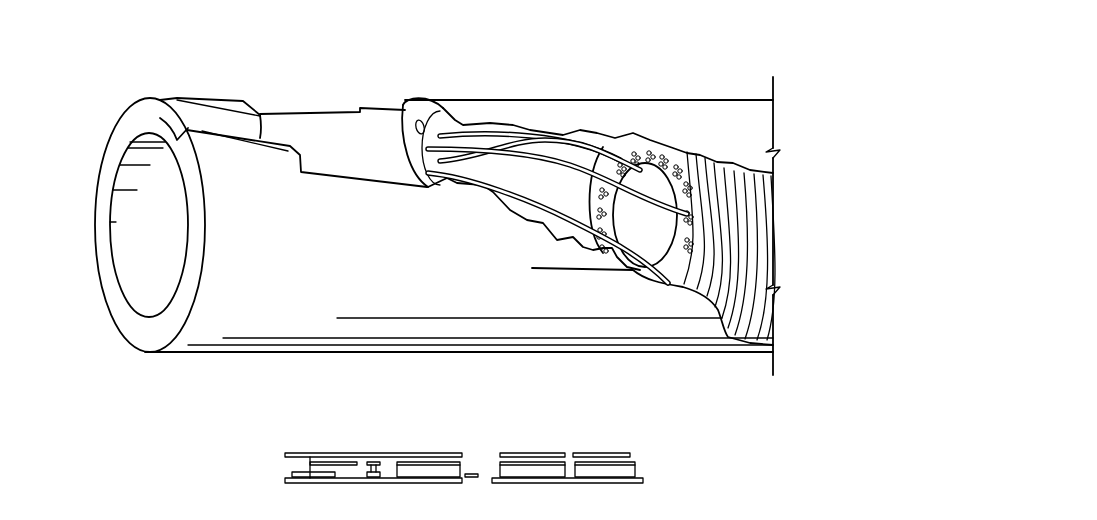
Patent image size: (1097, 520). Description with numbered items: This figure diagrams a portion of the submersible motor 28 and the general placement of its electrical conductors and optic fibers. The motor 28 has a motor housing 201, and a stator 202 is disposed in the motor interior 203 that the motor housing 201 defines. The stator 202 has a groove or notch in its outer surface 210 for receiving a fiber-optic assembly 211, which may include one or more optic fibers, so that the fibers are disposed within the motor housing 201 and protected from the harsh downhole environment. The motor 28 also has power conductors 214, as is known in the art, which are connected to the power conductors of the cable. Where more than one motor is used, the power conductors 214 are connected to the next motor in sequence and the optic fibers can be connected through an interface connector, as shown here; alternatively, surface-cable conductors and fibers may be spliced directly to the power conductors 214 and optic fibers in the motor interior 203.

The motor 28 is at (267, 314).
The motor housing 201 is at (710, 110).
The stator 202 is at (750, 280).
The motor interior 203 is at (543, 182).
The outer surface 210 is at (773, 181).
The fiber-optic assembly 211 is at (400, 108).
The power conductors 214 is at (477, 143).